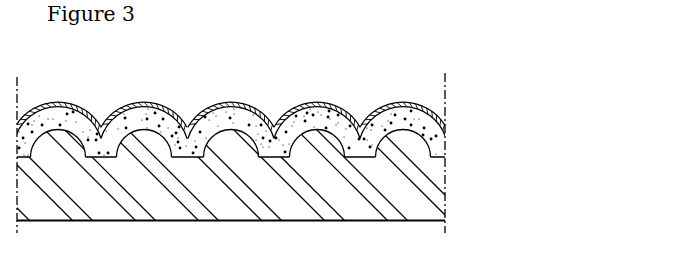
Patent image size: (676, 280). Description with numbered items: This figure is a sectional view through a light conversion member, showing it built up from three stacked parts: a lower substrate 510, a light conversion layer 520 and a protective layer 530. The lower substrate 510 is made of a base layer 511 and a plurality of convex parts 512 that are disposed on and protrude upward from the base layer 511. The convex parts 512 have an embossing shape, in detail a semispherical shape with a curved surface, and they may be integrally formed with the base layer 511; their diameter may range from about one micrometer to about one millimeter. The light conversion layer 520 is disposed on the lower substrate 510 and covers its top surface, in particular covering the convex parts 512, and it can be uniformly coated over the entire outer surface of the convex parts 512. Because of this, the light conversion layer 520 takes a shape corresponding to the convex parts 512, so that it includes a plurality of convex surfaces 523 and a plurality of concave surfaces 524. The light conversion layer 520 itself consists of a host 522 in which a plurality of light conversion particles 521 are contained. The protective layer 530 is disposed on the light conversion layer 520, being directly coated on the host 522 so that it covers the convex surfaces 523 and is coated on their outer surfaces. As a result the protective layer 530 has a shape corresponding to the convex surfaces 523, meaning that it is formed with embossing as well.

The lower substrate 510 is at (512, 200).
The base layer 511 is at (430, 210).
The convex parts 512 is at (411, 146).
The light conversion layer 520 is at (513, 110).
The light conversion particles 521 is at (442, 149).
The host 522 is at (441, 130).
The convex surfaces 523 is at (390, 112).
The concave surfaces 524 is at (386, 134).
The protective layer 530 is at (406, 103).